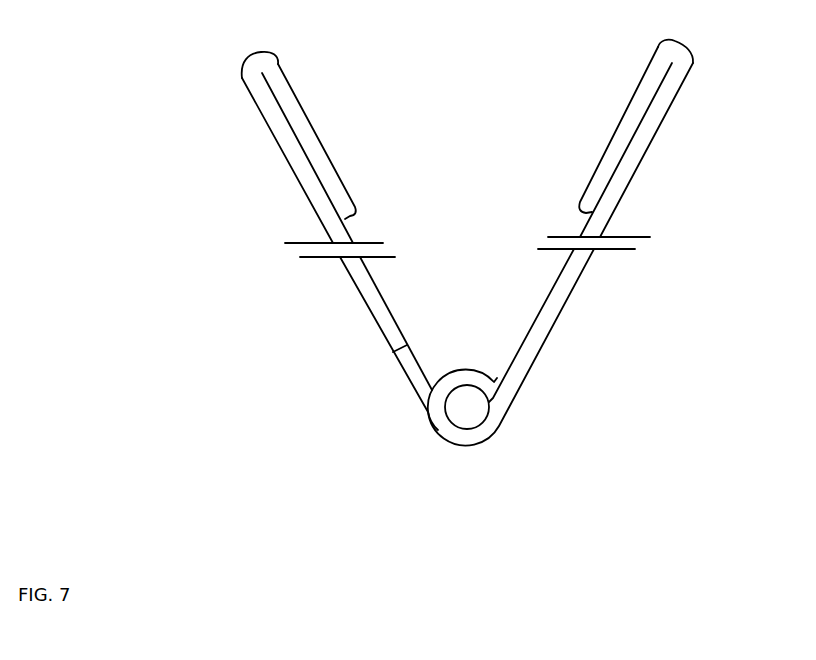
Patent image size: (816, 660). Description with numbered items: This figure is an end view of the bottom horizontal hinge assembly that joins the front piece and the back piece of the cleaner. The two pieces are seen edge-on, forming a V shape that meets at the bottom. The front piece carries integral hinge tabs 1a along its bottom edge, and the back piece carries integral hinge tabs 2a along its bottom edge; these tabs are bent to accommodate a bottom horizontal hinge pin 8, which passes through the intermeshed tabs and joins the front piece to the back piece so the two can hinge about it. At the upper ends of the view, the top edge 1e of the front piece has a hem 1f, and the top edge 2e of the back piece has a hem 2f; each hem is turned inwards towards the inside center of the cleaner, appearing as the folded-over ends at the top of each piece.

The integral hinge tabs 1a is at (412, 383).
The top edge 1e is at (268, 55).
The hem 1f is at (295, 92).
The integral hinge tabs 2a is at (458, 378).
The top edge 2e is at (673, 46).
The hem 2f is at (628, 102).
The bottom horizontal hinge pin 8 is at (470, 407).